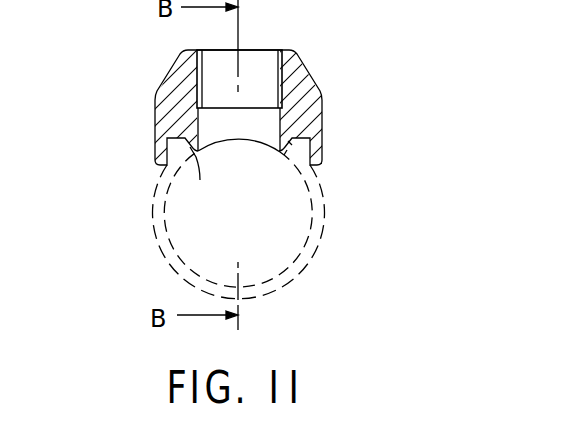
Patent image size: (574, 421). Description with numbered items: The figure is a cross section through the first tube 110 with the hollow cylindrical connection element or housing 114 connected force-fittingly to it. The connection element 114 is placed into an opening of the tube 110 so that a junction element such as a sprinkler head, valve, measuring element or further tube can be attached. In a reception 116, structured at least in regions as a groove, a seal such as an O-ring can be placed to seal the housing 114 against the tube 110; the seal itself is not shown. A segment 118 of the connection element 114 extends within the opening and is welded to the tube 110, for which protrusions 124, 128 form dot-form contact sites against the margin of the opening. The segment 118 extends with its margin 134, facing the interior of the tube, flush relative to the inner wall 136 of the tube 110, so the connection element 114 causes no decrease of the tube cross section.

The first tube 110 is at (294, 271).
The connection element 114 is at (297, 75).
The reception 116 is at (312, 152).
The segment 118 is at (290, 152).
The protrusion 124 is at (167, 169).
The protrusion 128 is at (306, 143).
The margin 134 is at (196, 158).
The inner wall 136 is at (198, 249).